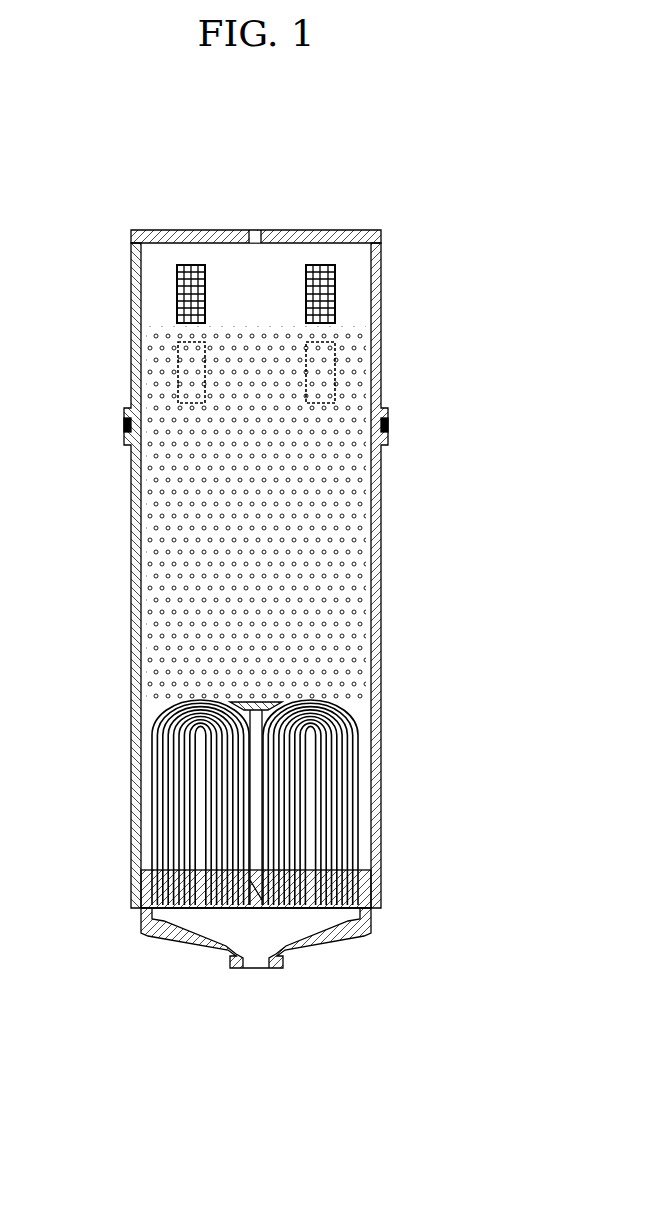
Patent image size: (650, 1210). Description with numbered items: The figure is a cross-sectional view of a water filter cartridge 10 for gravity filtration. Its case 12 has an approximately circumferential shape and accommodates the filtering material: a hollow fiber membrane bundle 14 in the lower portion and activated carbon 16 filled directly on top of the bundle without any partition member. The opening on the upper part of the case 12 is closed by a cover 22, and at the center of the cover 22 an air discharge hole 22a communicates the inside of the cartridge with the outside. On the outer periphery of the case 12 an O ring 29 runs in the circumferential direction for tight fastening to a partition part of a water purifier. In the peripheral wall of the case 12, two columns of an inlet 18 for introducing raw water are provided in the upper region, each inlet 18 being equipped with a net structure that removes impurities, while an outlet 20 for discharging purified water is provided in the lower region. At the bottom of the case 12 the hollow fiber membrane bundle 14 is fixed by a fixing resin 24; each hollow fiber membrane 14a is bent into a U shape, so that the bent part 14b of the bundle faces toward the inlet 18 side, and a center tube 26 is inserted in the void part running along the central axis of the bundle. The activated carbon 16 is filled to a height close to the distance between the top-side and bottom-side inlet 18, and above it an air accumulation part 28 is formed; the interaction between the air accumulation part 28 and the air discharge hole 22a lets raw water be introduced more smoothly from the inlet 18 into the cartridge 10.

The water filter cartridge 10 is at (150, 168).
The case 12 is at (388, 345).
The hollow fiber membrane bundle 14 is at (357, 757).
The hollow fiber membrane 14a is at (357, 817).
The bent part 14b is at (308, 700).
The activated carbon 16 is at (350, 495).
The inlet 18 is at (177, 292).
The outlet 20 is at (253, 970).
The cover 22 is at (321, 222).
The air discharge hole 22a is at (252, 230).
The fixing resin 24 is at (360, 892).
The center tube 26 is at (253, 773).
The air accumulation part 28 is at (242, 283).
The O ring 29 is at (125, 424).